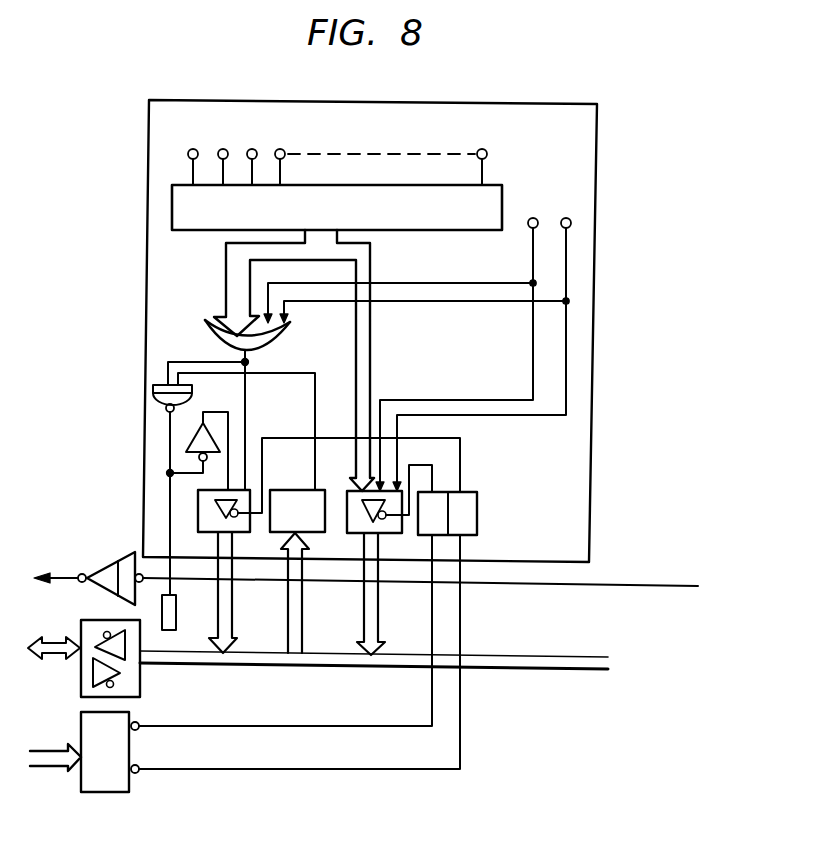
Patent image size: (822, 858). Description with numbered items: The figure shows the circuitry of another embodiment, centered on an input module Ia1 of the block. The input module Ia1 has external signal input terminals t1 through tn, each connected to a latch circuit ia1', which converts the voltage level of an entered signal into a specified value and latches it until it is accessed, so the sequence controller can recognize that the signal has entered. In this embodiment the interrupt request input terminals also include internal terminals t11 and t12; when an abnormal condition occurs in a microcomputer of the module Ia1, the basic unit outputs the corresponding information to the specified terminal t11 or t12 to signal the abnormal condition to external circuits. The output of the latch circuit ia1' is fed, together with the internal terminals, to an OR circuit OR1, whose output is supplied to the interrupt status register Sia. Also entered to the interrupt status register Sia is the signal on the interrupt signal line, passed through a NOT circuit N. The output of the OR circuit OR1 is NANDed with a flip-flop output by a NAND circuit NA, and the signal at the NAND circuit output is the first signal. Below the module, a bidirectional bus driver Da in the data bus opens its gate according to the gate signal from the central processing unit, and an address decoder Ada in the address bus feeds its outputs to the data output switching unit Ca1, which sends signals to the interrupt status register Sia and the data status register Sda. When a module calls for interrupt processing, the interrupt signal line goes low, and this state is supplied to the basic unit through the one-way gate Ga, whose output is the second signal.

The input module Ia1 is at (538, 104).
The latch circuit ia1' is at (337, 207).
The signal input terminal t1 is at (193, 155).
The signal input terminal tn is at (482, 155).
The internal terminal t11 is at (406, 344).
The internal terminal t12 is at (430, 344).
The OR circuit OR1 is at (265, 405).
The NAND circuit NA is at (185, 490).
The NOT circuit N is at (202, 451).
The interrupt status register Sia is at (211, 571).
The data status register Sda is at (360, 573).
The data output switching unit Ca1 is at (442, 491).
The one-way gate Ga is at (88, 573).
The bidirectional bus driver Da is at (142, 678).
The address decoder Ada is at (84, 752).